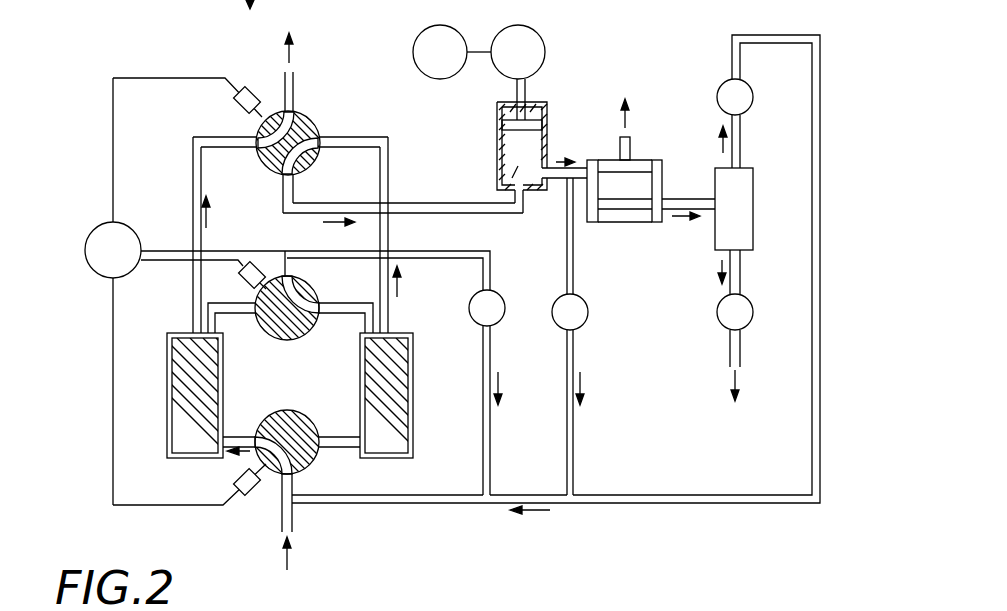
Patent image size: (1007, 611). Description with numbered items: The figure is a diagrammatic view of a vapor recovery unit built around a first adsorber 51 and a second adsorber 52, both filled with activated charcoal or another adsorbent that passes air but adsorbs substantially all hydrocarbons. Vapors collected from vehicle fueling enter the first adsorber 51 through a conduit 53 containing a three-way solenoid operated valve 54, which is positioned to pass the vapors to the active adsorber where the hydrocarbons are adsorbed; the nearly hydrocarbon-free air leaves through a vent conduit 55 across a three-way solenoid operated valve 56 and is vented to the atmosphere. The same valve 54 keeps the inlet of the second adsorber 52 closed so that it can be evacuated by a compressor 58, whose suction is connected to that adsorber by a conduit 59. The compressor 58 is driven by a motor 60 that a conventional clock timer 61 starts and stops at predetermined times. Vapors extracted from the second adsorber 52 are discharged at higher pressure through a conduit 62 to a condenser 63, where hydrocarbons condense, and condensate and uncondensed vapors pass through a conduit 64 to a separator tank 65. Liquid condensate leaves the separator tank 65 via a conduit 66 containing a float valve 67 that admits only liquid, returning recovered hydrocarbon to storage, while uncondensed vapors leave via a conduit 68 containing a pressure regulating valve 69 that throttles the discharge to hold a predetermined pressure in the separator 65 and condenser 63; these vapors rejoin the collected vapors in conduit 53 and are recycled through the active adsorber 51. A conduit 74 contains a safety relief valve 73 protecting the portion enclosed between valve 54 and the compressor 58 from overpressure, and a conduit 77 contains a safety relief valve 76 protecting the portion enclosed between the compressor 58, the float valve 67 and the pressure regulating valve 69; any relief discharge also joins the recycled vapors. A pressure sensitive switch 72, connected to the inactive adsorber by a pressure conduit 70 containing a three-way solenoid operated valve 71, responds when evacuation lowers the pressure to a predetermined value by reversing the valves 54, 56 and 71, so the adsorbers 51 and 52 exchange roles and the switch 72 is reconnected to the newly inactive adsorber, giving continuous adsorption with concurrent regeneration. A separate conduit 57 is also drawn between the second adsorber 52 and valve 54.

The first adsorber 51 is at (167, 390).
The second adsorber 52 is at (413, 404).
The conduit 53 is at (244, 436).
The three-way solenoid operated valve 54 is at (290, 408).
The vent conduit 55 is at (298, 78).
The three-way solenoid operated valve 56 is at (272, 166).
The conduit 57 is at (330, 436).
The compressor 58 is at (497, 148).
The conduit 59 is at (438, 214).
The motor 60 is at (540, 34).
The clock timer 61 is at (418, 36).
The conduit 62 is at (536, 190).
The condenser 63 is at (638, 158).
The conduit 64 is at (666, 218).
The separator tank 65 is at (753, 213).
The conduit 66 is at (742, 280).
The float valve 67 is at (717, 312).
The conduit 68 is at (728, 104).
The pressure regulating valve 69 is at (722, 86).
The pressure conduit 70 is at (330, 252).
The three-way solenoid operated valve 71 is at (268, 326).
The pressure sensitive switch 72 is at (100, 273).
The safety relief valve 73 is at (476, 320).
The conduit 74 is at (490, 440).
The safety relief valve 76 is at (588, 312).
The conduit 77 is at (573, 444).